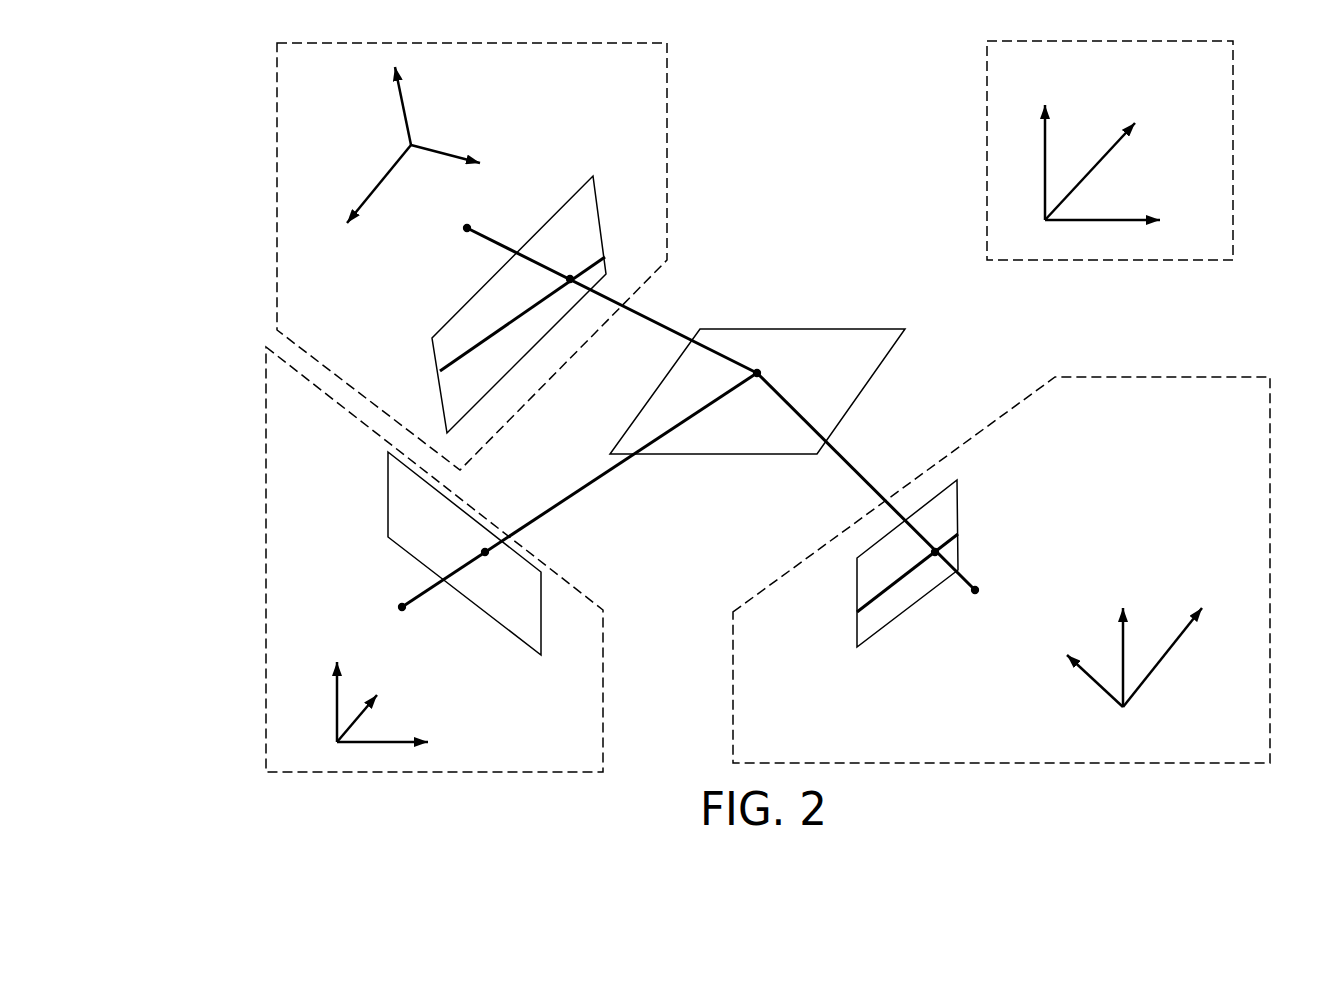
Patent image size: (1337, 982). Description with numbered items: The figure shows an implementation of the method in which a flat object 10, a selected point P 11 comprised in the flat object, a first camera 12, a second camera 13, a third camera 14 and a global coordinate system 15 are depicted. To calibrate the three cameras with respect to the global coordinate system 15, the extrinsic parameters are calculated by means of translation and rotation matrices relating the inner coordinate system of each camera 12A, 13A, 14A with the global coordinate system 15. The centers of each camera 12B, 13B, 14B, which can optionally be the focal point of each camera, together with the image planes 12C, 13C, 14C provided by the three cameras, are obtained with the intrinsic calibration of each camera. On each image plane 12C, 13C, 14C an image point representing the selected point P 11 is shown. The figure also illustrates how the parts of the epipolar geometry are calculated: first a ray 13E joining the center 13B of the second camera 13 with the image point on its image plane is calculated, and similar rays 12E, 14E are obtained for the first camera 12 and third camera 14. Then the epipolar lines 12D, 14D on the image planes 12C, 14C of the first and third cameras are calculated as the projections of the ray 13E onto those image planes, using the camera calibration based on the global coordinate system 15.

The flat object 10 is at (875, 373).
The point P 11 is at (765, 367).
The first camera 12 is at (667, 92).
The inner coordinate system of the first camera 12A is at (411, 145).
The center of the first camera 12B is at (467, 228).
The image plane of the first camera 12C is at (605, 217).
The epipolar line on the image plane of the first camera 12D is at (478, 345).
The ray of the first camera 12E is at (658, 322).
The second camera 13 is at (265, 605).
The inner coordinate system of the second camera 13A is at (337, 742).
The center of the second camera 13B is at (402, 607).
The image plane of the second camera 13C is at (388, 518).
The ray 13E is at (587, 487).
The third camera 14 is at (1195, 377).
The inner coordinate system of the third camera 14A is at (1123, 707).
The center of the third camera 14B is at (975, 590).
The image plane of the third camera 14C is at (960, 510).
The epipolar line on the image plane of the third camera 14D is at (903, 575).
The ray of the third camera 14E is at (857, 475).
The global coordinate system 15 is at (1233, 175).